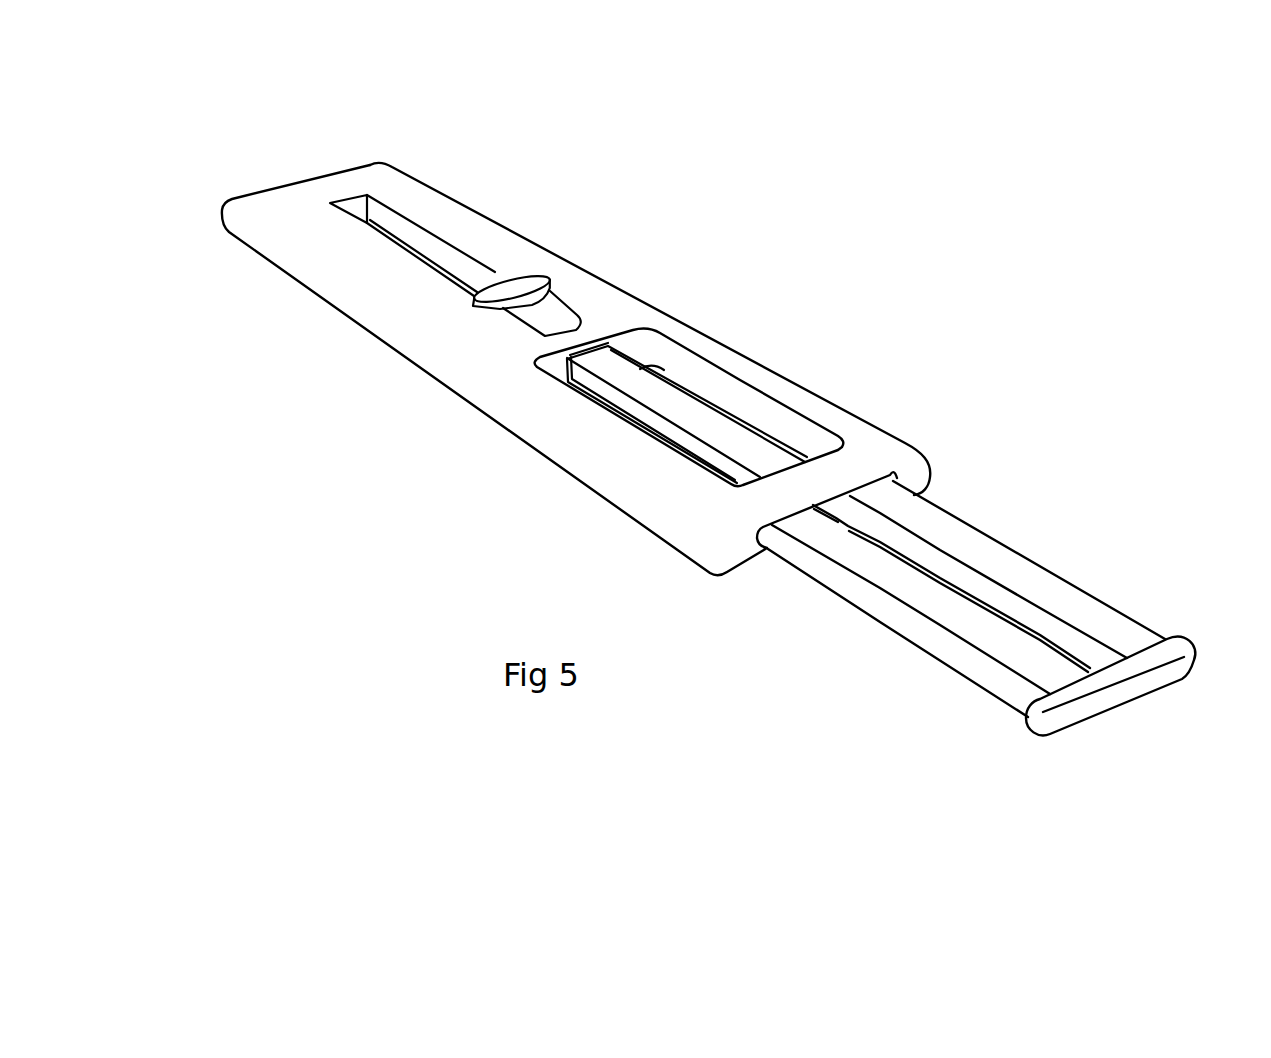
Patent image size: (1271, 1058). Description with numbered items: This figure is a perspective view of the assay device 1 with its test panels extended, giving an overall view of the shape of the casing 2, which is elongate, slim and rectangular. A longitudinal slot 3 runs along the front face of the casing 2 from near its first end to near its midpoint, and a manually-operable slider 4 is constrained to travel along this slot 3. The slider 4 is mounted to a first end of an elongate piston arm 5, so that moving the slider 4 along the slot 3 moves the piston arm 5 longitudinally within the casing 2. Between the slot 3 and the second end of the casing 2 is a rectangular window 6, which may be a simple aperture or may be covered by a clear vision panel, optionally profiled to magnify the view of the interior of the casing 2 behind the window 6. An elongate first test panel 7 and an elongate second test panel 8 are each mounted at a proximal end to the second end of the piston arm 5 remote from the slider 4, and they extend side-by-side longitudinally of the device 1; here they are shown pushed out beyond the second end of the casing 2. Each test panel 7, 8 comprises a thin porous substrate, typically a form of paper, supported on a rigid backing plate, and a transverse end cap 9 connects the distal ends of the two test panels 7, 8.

The assay device 1 is at (265, 163).
The casing 2 is at (318, 267).
The longitudinal slot 3 is at (383, 223).
The manually-operable slider 4 is at (513, 291).
The piston arm 5 is at (543, 323).
The rectangular window 6 is at (778, 420).
The first test panel 7 is at (897, 590).
The second test panel 8 is at (1018, 580).
The transverse end cap 9 is at (1168, 648).